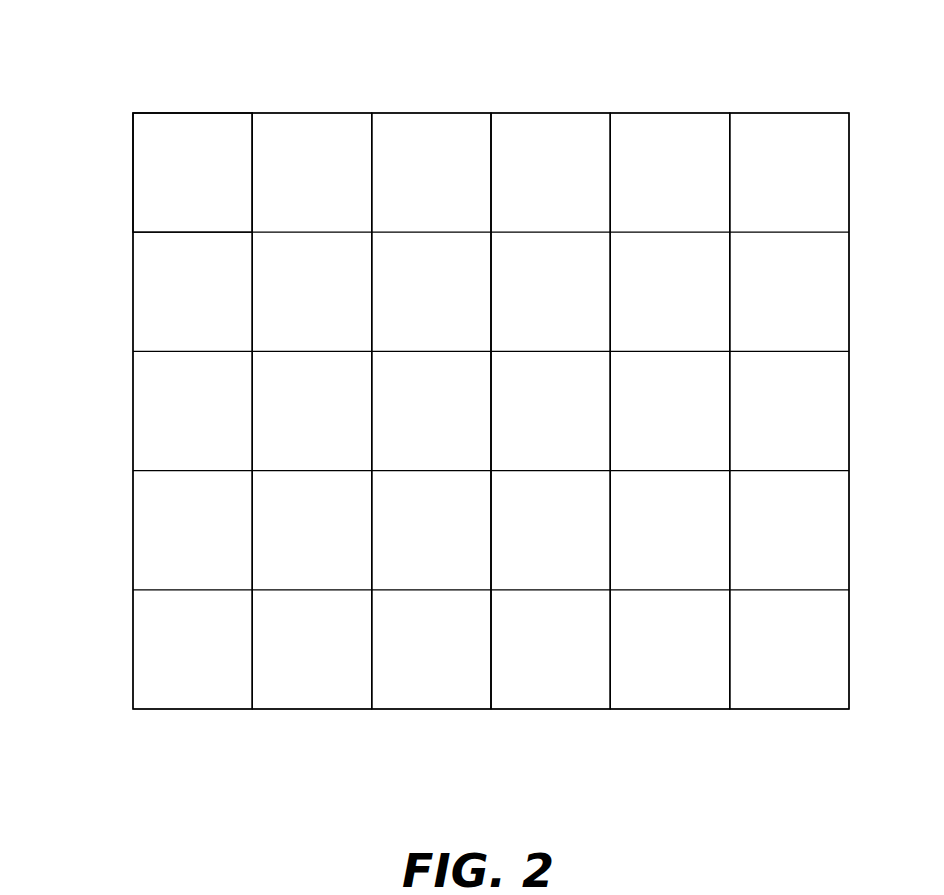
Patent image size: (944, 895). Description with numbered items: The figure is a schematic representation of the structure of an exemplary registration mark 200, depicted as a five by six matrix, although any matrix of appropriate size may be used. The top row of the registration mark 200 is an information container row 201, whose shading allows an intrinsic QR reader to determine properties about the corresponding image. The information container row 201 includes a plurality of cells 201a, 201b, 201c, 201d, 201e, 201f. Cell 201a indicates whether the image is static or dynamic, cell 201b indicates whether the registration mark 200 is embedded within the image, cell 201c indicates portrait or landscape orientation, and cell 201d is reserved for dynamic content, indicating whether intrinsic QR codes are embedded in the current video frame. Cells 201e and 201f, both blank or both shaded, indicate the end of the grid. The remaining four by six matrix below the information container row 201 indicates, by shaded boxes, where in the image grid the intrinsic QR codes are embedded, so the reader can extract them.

The registration mark 200 is at (492, 99).
The information container row 201 is at (122, 180).
The cell 201a is at (192, 411).
The cell 201b is at (311, 411).
The cell 201c is at (431, 411).
The cell 201d is at (550, 411).
The cell 201e is at (669, 411).
The cell 201f is at (789, 411).